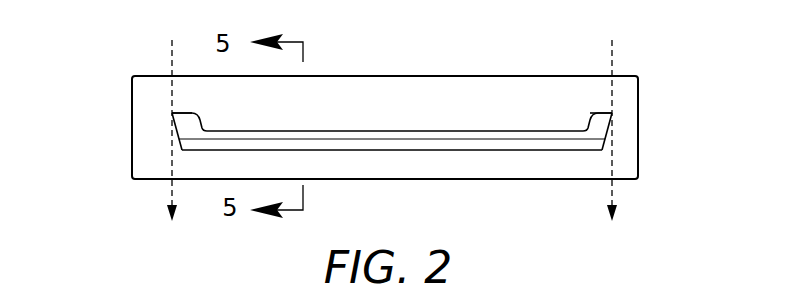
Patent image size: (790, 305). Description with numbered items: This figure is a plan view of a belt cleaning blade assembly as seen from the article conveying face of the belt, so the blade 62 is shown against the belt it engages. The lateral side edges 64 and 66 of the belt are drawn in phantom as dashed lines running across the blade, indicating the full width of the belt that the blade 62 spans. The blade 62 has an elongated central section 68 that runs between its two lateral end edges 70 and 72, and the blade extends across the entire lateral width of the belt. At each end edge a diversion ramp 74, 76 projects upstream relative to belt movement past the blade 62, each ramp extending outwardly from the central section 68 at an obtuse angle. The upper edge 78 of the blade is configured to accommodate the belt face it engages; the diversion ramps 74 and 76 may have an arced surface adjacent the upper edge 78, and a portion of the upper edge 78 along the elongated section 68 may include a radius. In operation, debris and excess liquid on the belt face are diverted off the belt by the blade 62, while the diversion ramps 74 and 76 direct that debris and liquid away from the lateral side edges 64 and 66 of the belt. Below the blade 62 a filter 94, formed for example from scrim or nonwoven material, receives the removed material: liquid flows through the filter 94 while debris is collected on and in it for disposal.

The blade 62 is at (476, 158).
The lateral side edge of the belt 64 is at (613, 58).
The lateral side edge of the belt 66 is at (171, 58).
The elongated central section 68 is at (372, 143).
The lateral end edge 70 is at (603, 140).
The lateral end edge 72 is at (183, 140).
The diversion ramp 74 is at (600, 127).
The diversion ramp 76 is at (184, 126).
The upper edge of the blade 78 is at (408, 131).
The filter 94 is at (484, 87).